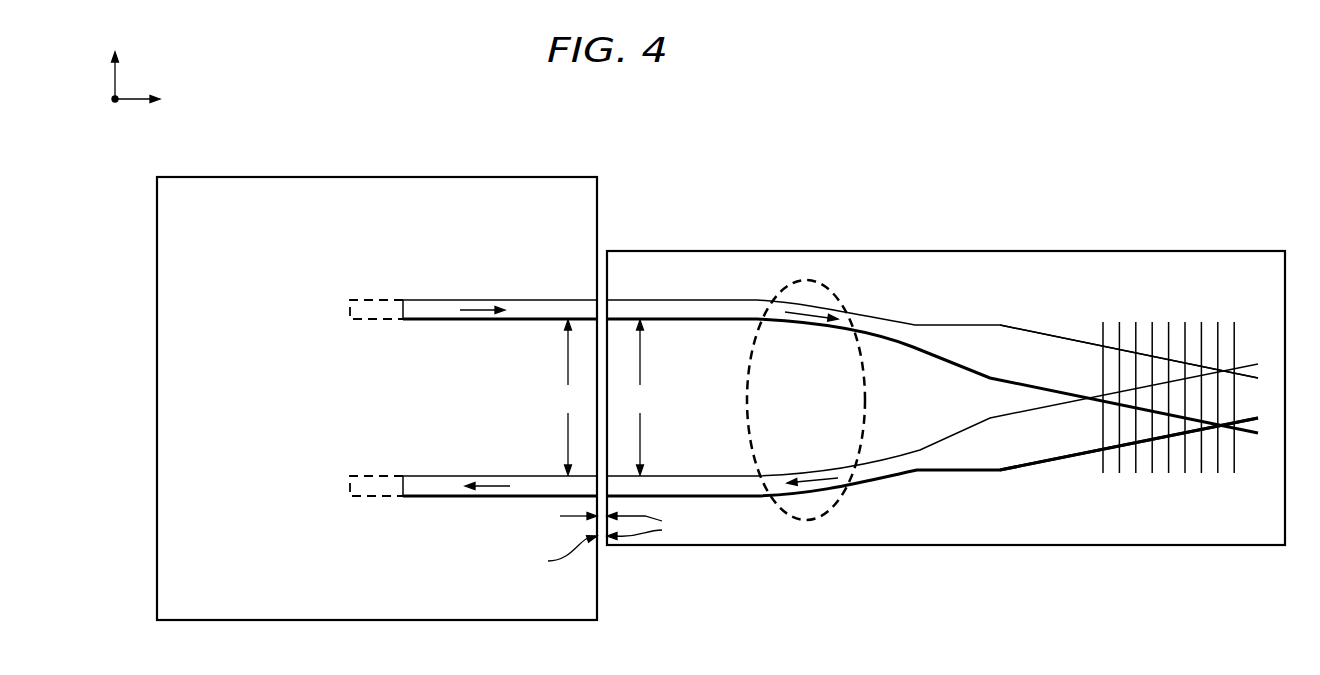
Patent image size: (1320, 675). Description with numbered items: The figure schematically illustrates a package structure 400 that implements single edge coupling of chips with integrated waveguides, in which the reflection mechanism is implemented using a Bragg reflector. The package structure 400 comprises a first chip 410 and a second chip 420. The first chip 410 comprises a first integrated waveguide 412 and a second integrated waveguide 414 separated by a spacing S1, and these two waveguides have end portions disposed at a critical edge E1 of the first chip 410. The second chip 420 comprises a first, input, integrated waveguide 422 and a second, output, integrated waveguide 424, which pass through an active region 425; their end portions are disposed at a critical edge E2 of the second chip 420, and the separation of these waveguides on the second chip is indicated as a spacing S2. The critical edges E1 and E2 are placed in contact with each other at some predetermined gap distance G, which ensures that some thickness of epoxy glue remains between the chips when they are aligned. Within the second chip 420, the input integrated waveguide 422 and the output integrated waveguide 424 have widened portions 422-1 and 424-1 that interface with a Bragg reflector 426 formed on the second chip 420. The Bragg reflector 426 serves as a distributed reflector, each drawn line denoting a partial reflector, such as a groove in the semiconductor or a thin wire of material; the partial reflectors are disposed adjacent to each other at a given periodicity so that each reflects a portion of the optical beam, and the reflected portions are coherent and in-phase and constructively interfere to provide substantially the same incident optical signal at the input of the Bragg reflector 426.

The package structure 400 is at (621, 98).
The first chip 410 is at (470, 177).
The first integrated waveguide 412 is at (475, 298).
The second integrated waveguide 414 is at (475, 474).
The second chip 420 is at (1222, 251).
The first (input) integrated waveguide 422 is at (653, 300).
The second (output) integrated waveguide 424 is at (690, 497).
The active region 425 is at (837, 298).
The widened portion 422-1 is at (1050, 333).
The widened portion 424-1 is at (1045, 462).
The Bragg reflector 426 is at (1245, 312).
The spacing S1 is at (568, 397).
The waveguide spacing on second chip S2 is at (640, 397).
The gap distance G is at (569, 515).
The critical edge E1 is at (561, 555).
The critical edge E2 is at (647, 526).